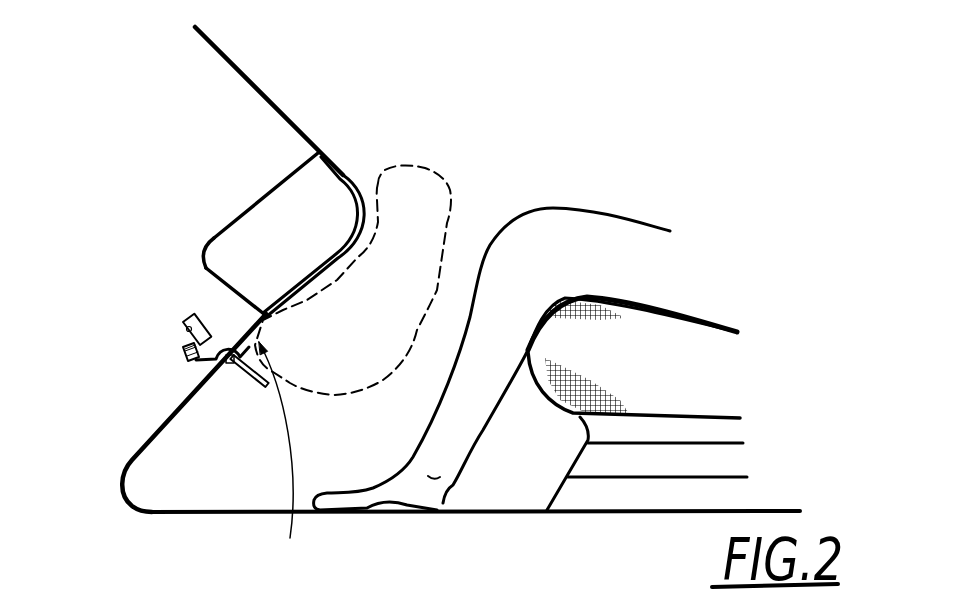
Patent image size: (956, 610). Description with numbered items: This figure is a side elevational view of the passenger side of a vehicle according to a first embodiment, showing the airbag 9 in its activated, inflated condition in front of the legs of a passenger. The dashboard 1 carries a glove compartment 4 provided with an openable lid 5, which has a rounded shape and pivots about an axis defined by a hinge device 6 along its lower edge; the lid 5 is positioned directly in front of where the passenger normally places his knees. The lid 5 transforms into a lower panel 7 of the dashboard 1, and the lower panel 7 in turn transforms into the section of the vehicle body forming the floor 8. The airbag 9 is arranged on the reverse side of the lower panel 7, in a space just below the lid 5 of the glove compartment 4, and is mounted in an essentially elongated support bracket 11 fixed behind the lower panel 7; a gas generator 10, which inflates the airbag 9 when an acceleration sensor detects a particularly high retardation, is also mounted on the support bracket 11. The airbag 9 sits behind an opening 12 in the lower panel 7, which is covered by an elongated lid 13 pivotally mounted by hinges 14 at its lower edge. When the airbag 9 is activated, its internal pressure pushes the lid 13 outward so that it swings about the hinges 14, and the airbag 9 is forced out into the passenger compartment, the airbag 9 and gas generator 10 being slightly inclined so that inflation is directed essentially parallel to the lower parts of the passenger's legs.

The dashboard 1 is at (260, 110).
The glove compartment 4 is at (263, 218).
The lid 5 is at (350, 173).
The hinge device 6 is at (203, 250).
The lower panel 7 is at (207, 385).
The floor 8 is at (220, 505).
The airbag 9 is at (423, 173).
The gas generator 10 is at (183, 348).
The support bracket 11 is at (194, 318).
The opening 12 is at (278, 456).
The lid 13 is at (260, 376).
The hinges 14 is at (222, 360).